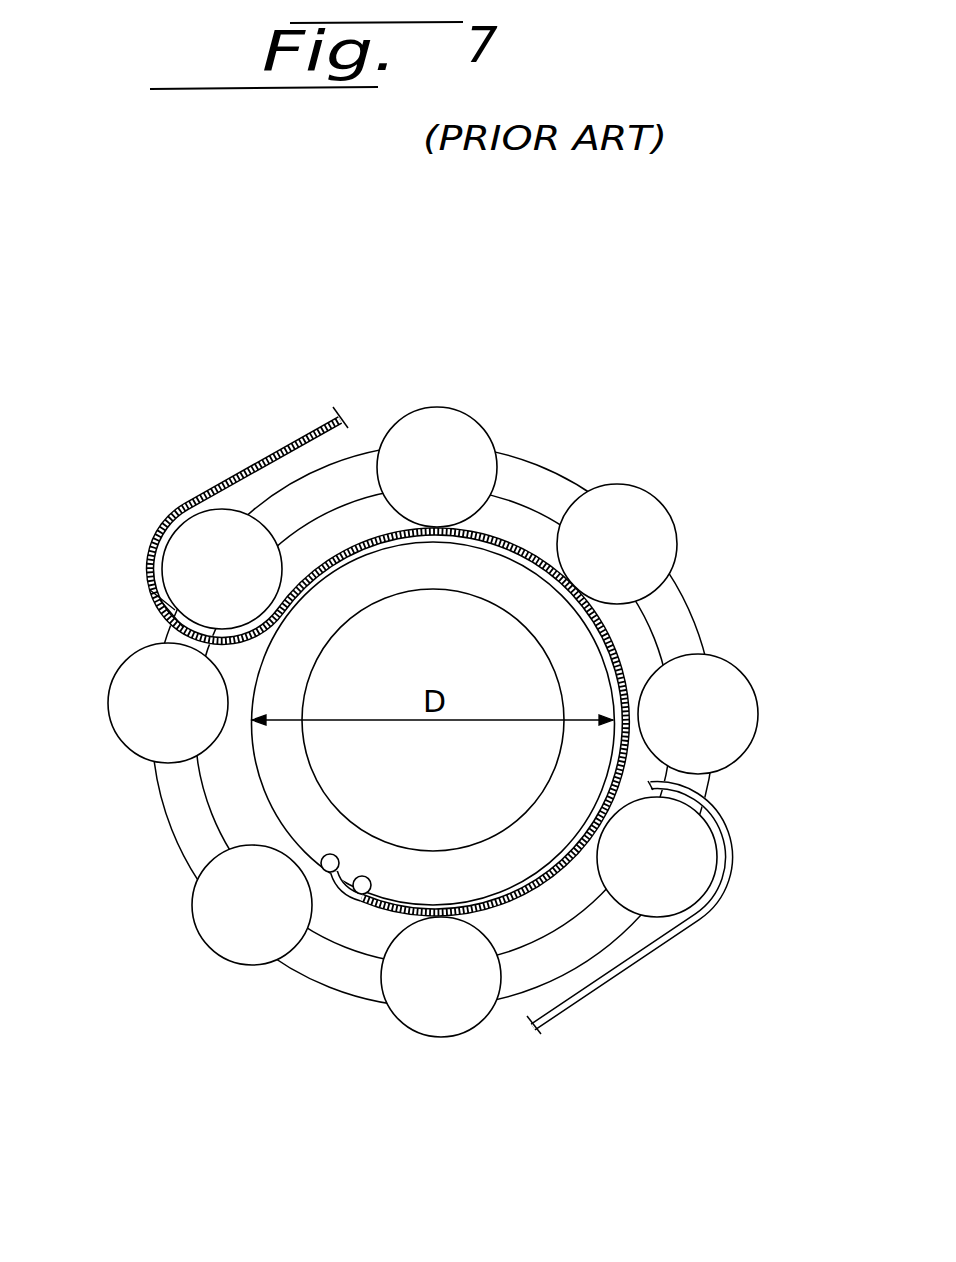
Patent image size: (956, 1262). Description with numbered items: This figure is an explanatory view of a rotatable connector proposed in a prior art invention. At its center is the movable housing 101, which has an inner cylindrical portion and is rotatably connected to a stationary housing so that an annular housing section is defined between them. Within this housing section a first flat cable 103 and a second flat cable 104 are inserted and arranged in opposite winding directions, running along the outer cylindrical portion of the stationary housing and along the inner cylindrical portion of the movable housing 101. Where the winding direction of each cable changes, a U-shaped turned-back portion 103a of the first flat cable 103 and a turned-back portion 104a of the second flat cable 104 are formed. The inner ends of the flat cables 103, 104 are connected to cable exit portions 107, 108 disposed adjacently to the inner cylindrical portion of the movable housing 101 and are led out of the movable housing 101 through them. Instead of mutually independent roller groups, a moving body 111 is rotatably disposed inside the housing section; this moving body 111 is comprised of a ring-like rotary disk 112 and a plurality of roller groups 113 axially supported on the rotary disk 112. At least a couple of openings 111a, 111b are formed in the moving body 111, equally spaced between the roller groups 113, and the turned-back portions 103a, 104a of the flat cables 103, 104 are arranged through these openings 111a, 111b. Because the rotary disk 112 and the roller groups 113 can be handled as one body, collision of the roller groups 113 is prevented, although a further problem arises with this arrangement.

The movable housing 101 is at (437, 573).
The first flat cable 103 is at (287, 434).
The turned-back portion of the first flat cable 103a is at (148, 613).
The second flat cable 104 is at (588, 1010).
The turned-back portion of the second flat cable 104a is at (720, 790).
The cable exit portion 107 is at (367, 883).
The cable exit portion 108 is at (340, 857).
The moving body 111 is at (454, 720).
The opening 111a is at (147, 593).
The opening 111b is at (730, 818).
The rotary disk 112 is at (672, 607).
The roller groups 113 is at (640, 521).